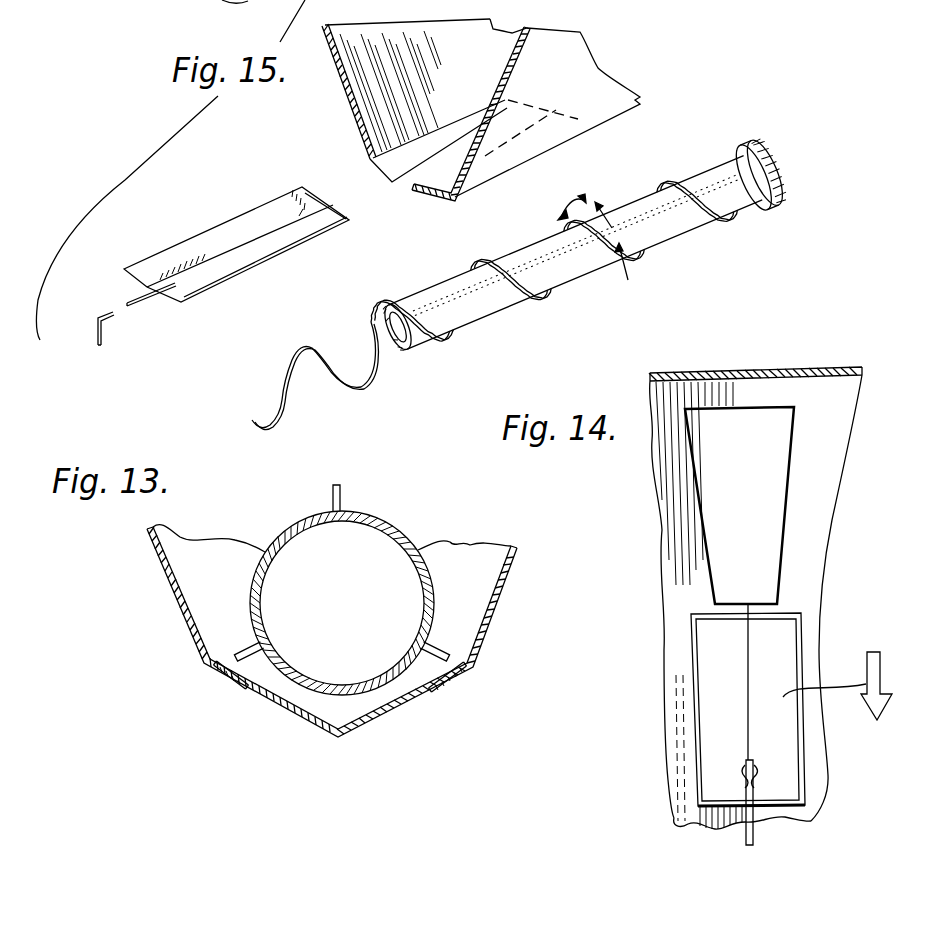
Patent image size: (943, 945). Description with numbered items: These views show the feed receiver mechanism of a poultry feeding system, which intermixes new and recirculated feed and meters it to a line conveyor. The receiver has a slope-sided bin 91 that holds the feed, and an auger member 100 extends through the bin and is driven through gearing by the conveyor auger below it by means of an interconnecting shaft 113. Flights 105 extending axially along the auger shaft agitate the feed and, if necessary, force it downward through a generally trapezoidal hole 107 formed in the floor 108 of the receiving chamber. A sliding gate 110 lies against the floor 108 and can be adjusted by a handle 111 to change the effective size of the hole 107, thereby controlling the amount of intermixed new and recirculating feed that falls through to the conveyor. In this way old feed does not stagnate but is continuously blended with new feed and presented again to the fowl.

In FIG. 13, the slope-sided bin 91 is at (177, 605).
In FIG. 13, the auger member 100 is at (250, 607).
In FIG. 13, the flights 105 is at (342, 493).
In FIG. 15, the trapezoidal hole 107 is at (412, 186).
In FIG. 13, the trapezoidal hole 107 is at (437, 690).
In FIG. 14, the trapezoidal hole 107 is at (708, 540).
In FIG. 15, the floor 108 is at (445, 128).
In FIG. 14, the floor 108 is at (678, 482).
In FIG. 15, the sliding gate 110 is at (180, 252).
In FIG. 13, the sliding gate 110 is at (305, 717).
In FIG. 14, the sliding gate 110 is at (713, 672).
In FIG. 15, the handle 111 is at (110, 336).
In FIG. 14, the handle 111 is at (748, 837).
In FIG. 15, the interconnecting shaft 113 is at (698, 170).